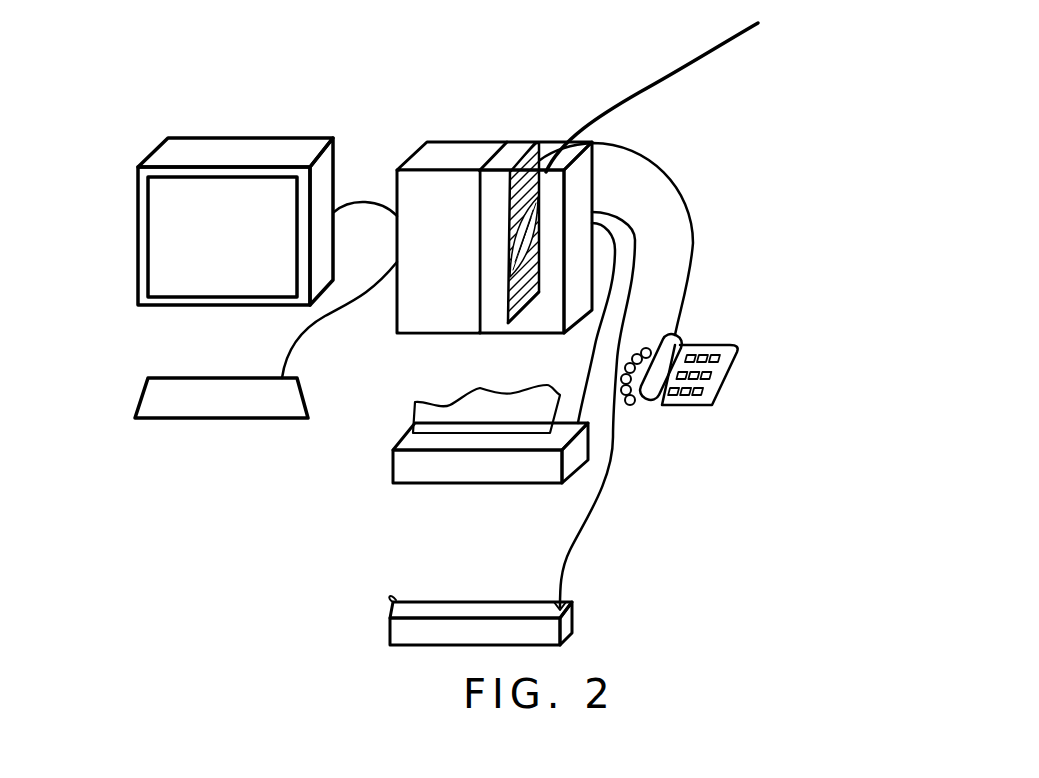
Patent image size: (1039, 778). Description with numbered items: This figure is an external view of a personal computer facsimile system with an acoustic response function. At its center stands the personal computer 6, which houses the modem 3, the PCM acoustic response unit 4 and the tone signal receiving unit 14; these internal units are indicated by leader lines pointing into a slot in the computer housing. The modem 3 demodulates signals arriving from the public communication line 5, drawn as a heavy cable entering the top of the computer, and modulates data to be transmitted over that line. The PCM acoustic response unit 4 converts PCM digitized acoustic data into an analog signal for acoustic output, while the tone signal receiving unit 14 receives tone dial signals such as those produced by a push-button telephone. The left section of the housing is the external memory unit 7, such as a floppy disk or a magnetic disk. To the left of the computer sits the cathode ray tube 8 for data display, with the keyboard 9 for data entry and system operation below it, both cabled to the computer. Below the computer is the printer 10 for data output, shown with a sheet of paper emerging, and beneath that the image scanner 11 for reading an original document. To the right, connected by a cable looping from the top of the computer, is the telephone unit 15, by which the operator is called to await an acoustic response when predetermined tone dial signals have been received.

The modem 3 is at (539, 186).
The PCM acoustic response unit 4 is at (539, 227).
The public communication line 5 is at (723, 50).
The personal computer 6 is at (582, 295).
The external memory unit 7 is at (440, 147).
The cathode ray tube (CRT) 8 is at (233, 146).
The keyboard 9 is at (168, 407).
The printer 10 is at (418, 473).
The image scanner 11 is at (572, 618).
The tone signal receiving unit 14 is at (539, 273).
The telephone unit 15 is at (740, 348).